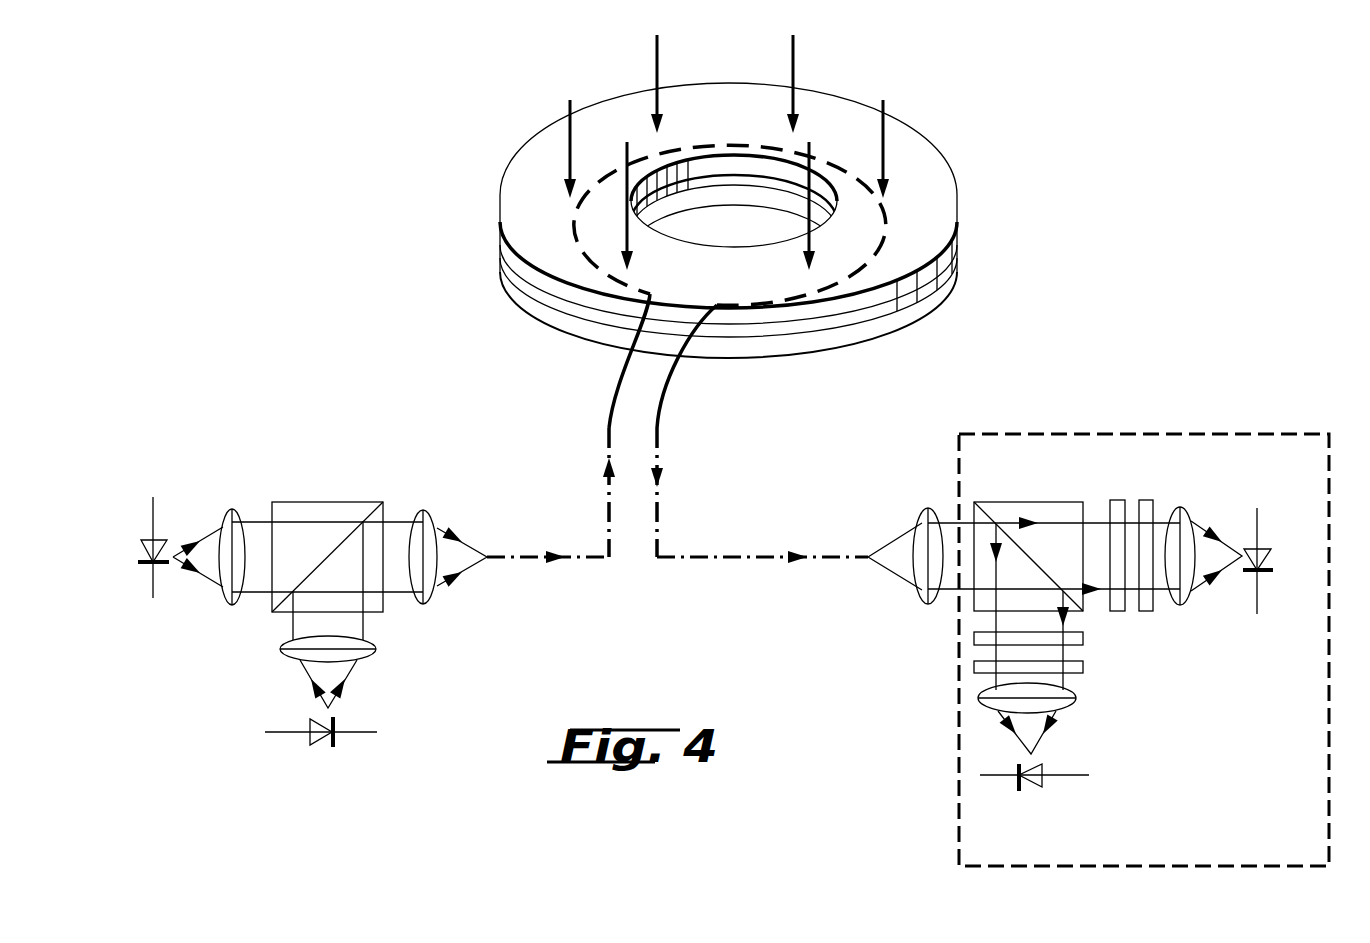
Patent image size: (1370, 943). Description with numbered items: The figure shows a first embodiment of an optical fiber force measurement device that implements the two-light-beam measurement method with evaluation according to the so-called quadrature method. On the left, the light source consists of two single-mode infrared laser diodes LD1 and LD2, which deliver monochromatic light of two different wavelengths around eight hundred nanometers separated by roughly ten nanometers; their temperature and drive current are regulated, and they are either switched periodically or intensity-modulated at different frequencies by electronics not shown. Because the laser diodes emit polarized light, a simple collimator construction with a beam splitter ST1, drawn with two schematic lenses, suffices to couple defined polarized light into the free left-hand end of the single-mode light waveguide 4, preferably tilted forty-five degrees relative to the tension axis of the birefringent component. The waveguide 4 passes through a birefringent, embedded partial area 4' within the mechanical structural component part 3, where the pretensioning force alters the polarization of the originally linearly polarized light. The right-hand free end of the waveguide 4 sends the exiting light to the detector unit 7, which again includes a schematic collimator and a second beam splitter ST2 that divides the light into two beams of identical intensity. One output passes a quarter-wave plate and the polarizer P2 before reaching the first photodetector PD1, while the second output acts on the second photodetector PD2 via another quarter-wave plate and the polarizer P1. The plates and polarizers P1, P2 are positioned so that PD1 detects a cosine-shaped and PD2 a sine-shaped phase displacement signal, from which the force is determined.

The rotating body 3 is at (957, 232).
The light waveguide (LWL) 4 is at (673, 425).
The embedded partial area of the LWL 4' is at (668, 225).
The detector unit 7 is at (1205, 432).
The beam splitter ST1 is at (300, 510).
The second beam splitter ST2 is at (1003, 512).
The laser diode LD1 is at (142, 543).
The laser diode LD2 is at (310, 737).
The first photodetector PD1 is at (1263, 558).
The second photodetector PD2 is at (1044, 768).
The polarizer P1 is at (1083, 665).
The polarizer P2 is at (1147, 508).